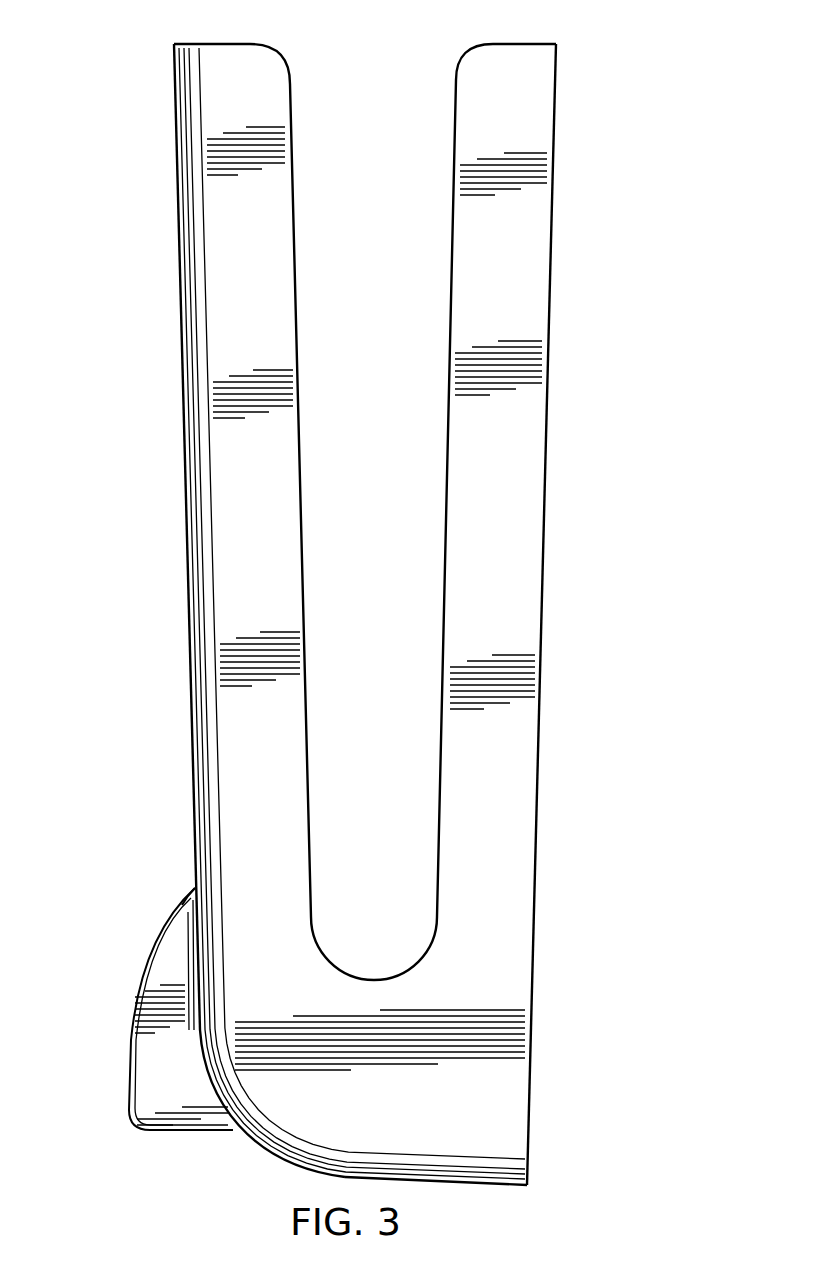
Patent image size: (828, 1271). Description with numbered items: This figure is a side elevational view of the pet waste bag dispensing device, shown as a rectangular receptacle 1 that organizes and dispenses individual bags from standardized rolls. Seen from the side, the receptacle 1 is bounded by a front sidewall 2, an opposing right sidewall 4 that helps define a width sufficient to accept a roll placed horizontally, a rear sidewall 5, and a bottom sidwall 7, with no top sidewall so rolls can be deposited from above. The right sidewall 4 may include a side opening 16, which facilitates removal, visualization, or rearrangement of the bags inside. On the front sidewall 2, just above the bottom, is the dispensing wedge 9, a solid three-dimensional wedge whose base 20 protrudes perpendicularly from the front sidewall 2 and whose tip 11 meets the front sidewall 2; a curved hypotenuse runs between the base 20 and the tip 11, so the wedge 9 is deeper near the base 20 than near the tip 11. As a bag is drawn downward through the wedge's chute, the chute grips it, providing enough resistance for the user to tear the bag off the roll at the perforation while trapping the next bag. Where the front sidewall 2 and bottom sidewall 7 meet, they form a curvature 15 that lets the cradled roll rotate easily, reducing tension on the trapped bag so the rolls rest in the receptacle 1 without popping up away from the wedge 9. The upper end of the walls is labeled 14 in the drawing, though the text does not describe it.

The rectangular receptacle 1 is at (649, 50).
The front sidewall 2 is at (184, 499).
The right sidewall 4 is at (513, 283).
The rear sidewall 5 is at (542, 589).
The bottom sidewall 7 is at (491, 1184).
The dispensing wedge 9 is at (165, 958).
The tip 11 is at (195, 884).
The top end of arm 14 is at (223, 44).
The curvature 15 is at (262, 1152).
The side opening 16 is at (376, 547).
The base 20 is at (165, 1131).